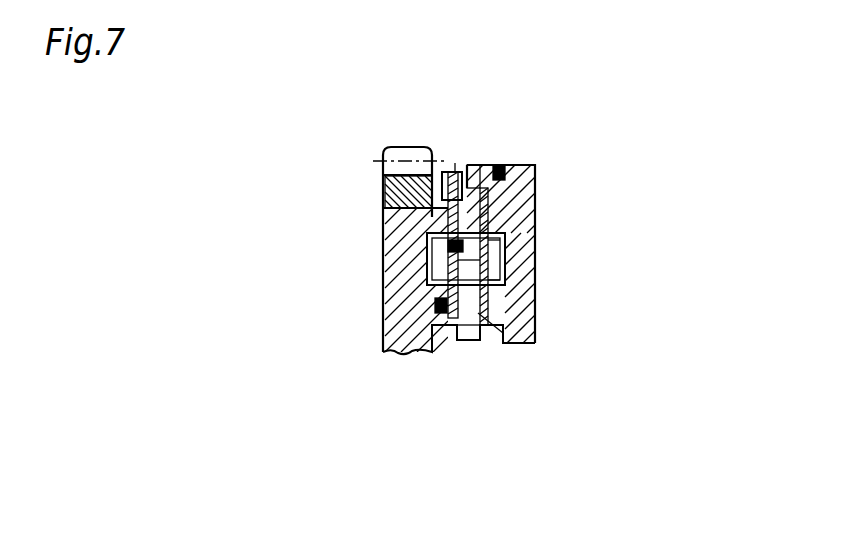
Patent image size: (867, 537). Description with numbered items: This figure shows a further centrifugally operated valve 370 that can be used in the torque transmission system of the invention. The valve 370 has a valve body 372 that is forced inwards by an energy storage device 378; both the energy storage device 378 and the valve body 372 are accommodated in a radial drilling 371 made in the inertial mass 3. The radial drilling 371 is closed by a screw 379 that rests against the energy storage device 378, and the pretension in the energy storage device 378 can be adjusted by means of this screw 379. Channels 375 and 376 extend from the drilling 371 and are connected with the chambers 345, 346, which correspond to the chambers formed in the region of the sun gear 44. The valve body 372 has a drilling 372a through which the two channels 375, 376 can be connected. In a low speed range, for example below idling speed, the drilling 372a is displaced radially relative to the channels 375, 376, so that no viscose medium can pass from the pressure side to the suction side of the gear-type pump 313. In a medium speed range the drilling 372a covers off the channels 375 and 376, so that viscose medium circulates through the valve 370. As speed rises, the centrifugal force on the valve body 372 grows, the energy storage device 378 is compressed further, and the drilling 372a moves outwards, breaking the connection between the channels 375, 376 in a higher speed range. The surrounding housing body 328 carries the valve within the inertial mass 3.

The inertial mass 3 is at (383, 183).
The radial drilling 371 is at (386, 209).
The channel 375 is at (425, 232).
The valve body 372 is at (445, 242).
The chamber 345 is at (440, 283).
The housing body 328 is at (438, 276).
The screw 379 is at (500, 168).
The energy storage device 378 is at (488, 203).
The valve 370 is at (470, 224).
The channel 376 is at (500, 243).
The drilling 372a is at (487, 258).
The chamber 346 is at (500, 285).
The sun gear 44 is at (505, 335).
The gear-type pump 313 is at (470, 280).